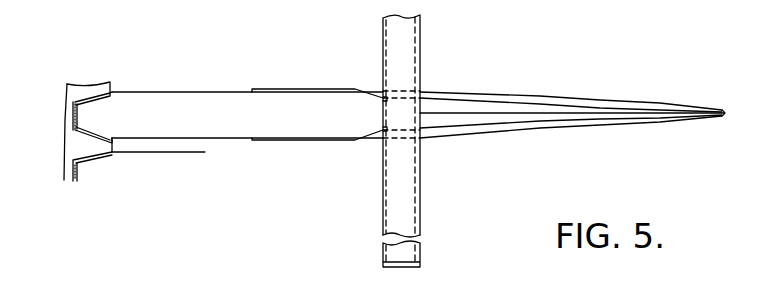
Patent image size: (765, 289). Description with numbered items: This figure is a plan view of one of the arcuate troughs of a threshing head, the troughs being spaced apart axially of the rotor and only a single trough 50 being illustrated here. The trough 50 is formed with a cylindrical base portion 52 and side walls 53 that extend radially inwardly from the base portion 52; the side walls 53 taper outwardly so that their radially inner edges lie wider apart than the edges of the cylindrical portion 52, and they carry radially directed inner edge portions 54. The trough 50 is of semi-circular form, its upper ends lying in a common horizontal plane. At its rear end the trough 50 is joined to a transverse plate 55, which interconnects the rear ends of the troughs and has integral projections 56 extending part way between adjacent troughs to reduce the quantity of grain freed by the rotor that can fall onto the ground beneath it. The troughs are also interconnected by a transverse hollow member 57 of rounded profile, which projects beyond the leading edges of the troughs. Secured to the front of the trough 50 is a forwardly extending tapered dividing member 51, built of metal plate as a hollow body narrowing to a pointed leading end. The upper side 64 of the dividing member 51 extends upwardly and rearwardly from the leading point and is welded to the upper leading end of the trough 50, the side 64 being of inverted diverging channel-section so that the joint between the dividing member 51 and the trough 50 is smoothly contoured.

The trough 50 is at (203, 93).
The dividing member 51 is at (495, 132).
The cylindrical base portion 52 is at (70, 97).
The side walls 53 is at (90, 87).
The inner edge portions 54 is at (103, 92).
The transverse plate 55 is at (67, 135).
The projections 56 is at (104, 146).
The transverse hollow member 57 is at (418, 187).
The upper side 64 is at (542, 113).